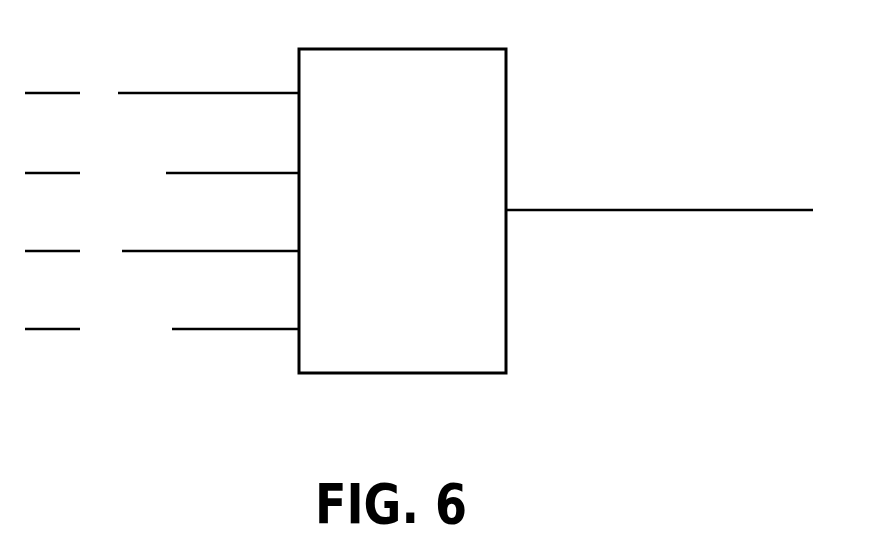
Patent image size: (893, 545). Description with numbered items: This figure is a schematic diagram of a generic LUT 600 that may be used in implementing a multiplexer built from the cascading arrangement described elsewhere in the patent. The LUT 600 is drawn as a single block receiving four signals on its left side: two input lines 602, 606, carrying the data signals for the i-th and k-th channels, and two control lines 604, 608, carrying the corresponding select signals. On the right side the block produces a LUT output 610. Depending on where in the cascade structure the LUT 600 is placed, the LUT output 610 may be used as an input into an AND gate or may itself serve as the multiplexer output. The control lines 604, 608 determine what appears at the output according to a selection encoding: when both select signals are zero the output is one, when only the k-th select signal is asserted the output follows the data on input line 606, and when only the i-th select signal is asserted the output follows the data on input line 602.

The generic LUT 600 is at (507, 127).
The input line 602 is at (267, 92).
The control line 604 is at (267, 172).
The input line 606 is at (267, 250).
The control line 608 is at (267, 328).
The LUT output 610 is at (735, 210).